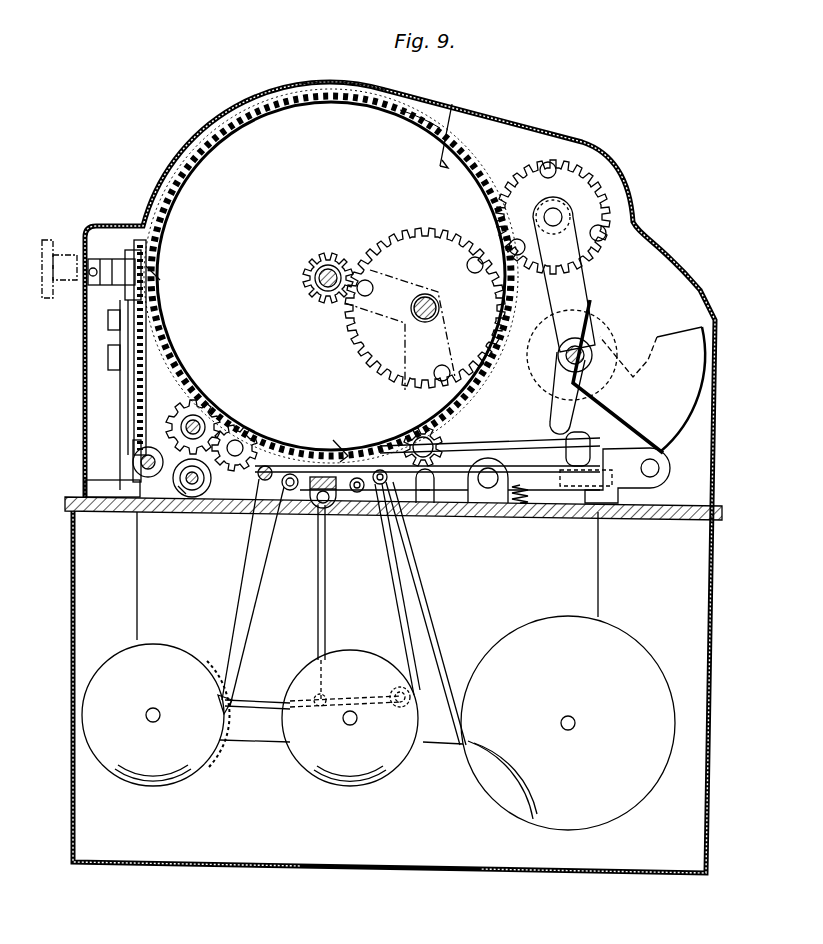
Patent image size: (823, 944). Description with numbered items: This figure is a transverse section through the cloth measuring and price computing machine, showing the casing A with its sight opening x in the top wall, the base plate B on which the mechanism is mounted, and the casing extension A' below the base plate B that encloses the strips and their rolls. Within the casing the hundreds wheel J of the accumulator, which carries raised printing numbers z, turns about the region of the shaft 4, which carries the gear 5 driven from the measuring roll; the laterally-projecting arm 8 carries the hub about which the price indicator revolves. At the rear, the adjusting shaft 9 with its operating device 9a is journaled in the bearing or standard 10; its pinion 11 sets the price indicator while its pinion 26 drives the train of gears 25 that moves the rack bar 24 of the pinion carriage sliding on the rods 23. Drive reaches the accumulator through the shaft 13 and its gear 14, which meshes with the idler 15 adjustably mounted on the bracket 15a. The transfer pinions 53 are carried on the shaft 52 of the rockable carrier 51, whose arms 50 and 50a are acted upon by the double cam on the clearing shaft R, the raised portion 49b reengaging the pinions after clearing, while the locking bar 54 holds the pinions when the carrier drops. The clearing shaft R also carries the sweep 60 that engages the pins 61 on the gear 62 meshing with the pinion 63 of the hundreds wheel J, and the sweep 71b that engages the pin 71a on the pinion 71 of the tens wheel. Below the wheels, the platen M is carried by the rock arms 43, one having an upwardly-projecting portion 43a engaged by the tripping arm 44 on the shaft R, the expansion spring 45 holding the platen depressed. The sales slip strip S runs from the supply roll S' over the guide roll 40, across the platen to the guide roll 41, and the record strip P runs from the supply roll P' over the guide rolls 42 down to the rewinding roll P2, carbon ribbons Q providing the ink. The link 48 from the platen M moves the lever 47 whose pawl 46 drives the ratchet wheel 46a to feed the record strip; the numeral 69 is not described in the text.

The casing A is at (394, 477).
The casing extension A' is at (390, 889).
The sight opening x is at (342, 85).
The raised numbers z is at (425, 122).
The base plate B is at (722, 513).
The hundreds wheel J is at (331, 276).
The guide pointer 69 is at (447, 115).
The laterally-projecting arm 8 is at (375, 320).
The gear 62 is at (421, 242).
The laterally-projecting pins 61 is at (476, 256).
The pinion 63 is at (308, 264).
The shaft 4 is at (316, 282).
The pinion 71 is at (527, 172).
The laterally-projecting pin 71a is at (557, 171).
The clearing shaft R is at (588, 320).
The sweep 71b is at (668, 450).
The raised cam portion 49b is at (586, 343).
The sweep 60 is at (700, 350).
The arm 50a is at (633, 362).
The tripping arm 44 is at (555, 416).
The arm 50 is at (565, 446).
The rock arms 43 is at (590, 500).
The upwardly-projecting portion 43a is at (632, 505).
The expansion spring 45 is at (520, 506).
The locking bar 54 is at (487, 505).
The guide roll 40 is at (425, 505).
The rockable carrier 51 is at (440, 448).
The shaft 52 is at (412, 440).
The transfer pinions 53 is at (423, 436).
The carbon ribbons Q is at (346, 452).
The adjusting shaft 9 is at (94, 260).
The operating device 9a is at (48, 240).
The pinion 26 is at (142, 240).
The pinion 11 is at (150, 272).
The train of gears 25 is at (122, 328).
The bearing 10 is at (124, 403).
The rack bar 24 is at (135, 428).
The gear 5 is at (68, 505).
The rods 23 is at (146, 472).
The idler 15 is at (196, 400).
The bracket 15a is at (178, 492).
The shaft 13 is at (192, 498).
The gear 14 is at (232, 470).
The guide roll 41 is at (267, 482).
The guide rolls 42 is at (358, 494).
The record strip P is at (397, 589).
The sales slip strip S is at (426, 613).
The platen M is at (320, 504).
The link 48 is at (318, 609).
The lever 47 is at (276, 700).
The pawl 46 is at (224, 698).
The ratchet wheel 46a is at (212, 745).
The rewinding roll P2 is at (140, 765).
The record strip supply roll P' is at (350, 735).
The sales slip supply roll S' is at (568, 728).